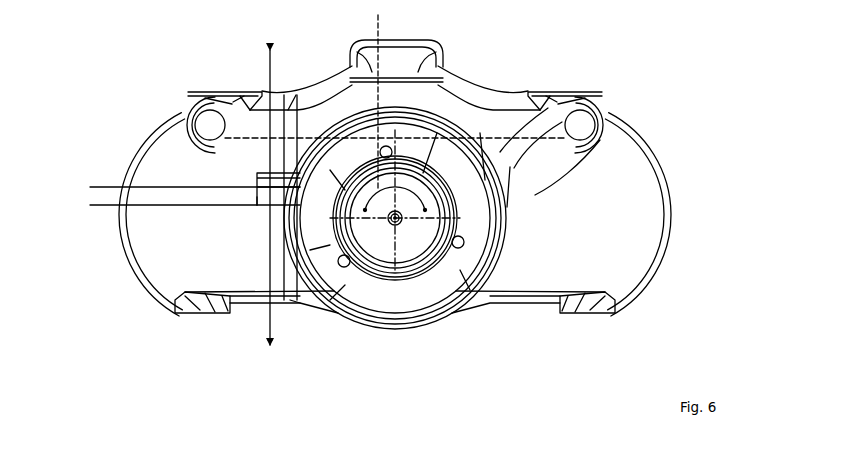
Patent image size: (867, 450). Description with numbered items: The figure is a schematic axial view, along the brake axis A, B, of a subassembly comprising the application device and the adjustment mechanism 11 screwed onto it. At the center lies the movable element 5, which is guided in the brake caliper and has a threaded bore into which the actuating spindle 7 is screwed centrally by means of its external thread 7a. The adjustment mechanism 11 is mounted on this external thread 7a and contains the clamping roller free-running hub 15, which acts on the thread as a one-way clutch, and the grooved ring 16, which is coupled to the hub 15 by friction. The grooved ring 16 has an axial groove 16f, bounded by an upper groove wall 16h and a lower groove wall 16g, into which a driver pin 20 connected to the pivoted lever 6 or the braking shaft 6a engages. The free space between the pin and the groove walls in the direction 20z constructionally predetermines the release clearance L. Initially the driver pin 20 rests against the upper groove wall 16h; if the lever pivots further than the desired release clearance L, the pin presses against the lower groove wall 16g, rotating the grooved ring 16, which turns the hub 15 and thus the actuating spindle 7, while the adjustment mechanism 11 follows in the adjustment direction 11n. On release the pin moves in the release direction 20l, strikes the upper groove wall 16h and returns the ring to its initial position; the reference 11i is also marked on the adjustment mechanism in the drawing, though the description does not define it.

The movable element 5 is at (410, 60).
The pivoted lever 6 is at (170, 254).
The braking shaft 6a is at (617, 209).
The actuating spindle 7 is at (457, 203).
The external thread 7a is at (590, 90).
The adjustment mechanism 11 is at (462, 305).
The inner flange arc 11i is at (413, 190).
The adjustment direction 11n is at (378, 15).
The clamping roller free-running hub 15 is at (465, 247).
The grooved ring 16 is at (380, 313).
The axial groove 16f is at (257, 197).
The lower groove wall 16g is at (298, 300).
The upper groove wall 16h is at (288, 110).
The driver pin 20 is at (257, 173).
The release direction 20l is at (267, 77).
The direction 20z is at (275, 298).
The release clearance L is at (102, 197).
The brake axis A is at (397, 222).
The brake axis B is at (395, 218).